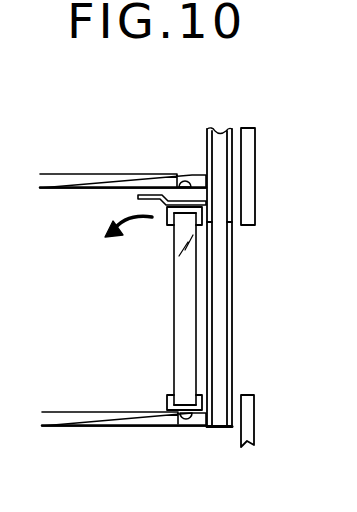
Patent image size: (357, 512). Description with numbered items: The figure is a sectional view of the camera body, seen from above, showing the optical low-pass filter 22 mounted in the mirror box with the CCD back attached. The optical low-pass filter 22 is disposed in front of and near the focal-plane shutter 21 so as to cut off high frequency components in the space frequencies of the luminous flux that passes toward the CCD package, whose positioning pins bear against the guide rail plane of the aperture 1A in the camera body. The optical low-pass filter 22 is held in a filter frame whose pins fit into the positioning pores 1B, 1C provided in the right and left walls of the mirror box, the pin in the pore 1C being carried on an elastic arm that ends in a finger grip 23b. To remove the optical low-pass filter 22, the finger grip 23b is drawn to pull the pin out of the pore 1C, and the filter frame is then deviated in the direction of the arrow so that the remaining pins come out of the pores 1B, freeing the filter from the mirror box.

The aperture 1A is at (254, 405).
The positioning pore 1B is at (184, 424).
The positioning pore 1C is at (186, 181).
The focal-plane shutter 21 is at (227, 315).
The optical low-pass filter 22 is at (174, 315).
The finger grip 23b is at (138, 197).